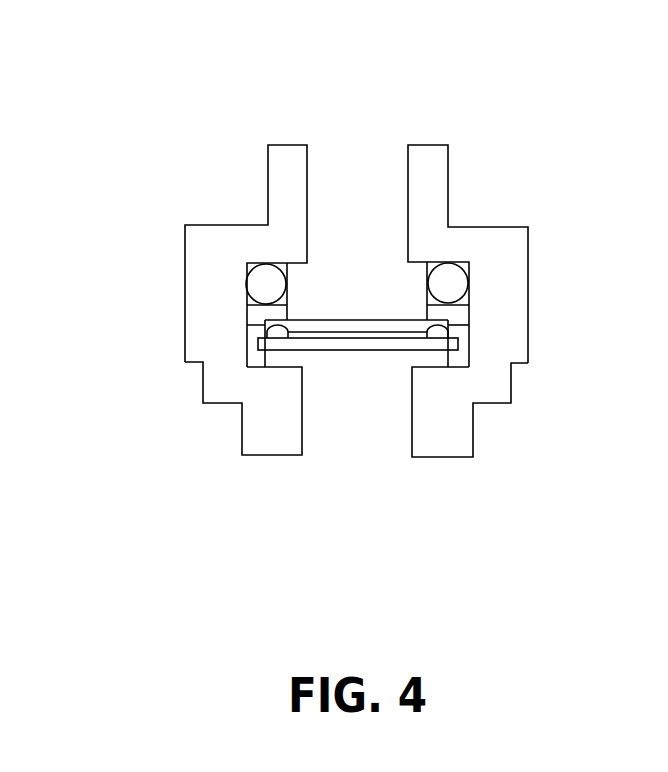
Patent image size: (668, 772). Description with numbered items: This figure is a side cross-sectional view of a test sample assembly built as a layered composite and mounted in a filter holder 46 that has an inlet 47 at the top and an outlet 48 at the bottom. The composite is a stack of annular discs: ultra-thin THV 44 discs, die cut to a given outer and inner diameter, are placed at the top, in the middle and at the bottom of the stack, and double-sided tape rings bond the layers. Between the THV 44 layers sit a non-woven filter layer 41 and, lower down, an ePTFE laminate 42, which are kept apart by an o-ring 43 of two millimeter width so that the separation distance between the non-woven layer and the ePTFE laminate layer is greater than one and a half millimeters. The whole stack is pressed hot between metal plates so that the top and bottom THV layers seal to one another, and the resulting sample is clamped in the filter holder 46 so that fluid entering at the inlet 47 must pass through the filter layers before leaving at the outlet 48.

The non-woven filter layer 41 is at (247, 320).
The ePTFE laminate 42 is at (247, 342).
The o-ring 43 is at (290, 318).
The THV 44 is at (468, 357).
The filter holder 46 is at (430, 220).
The inlet 47 is at (333, 157).
The outlet 48 is at (330, 445).